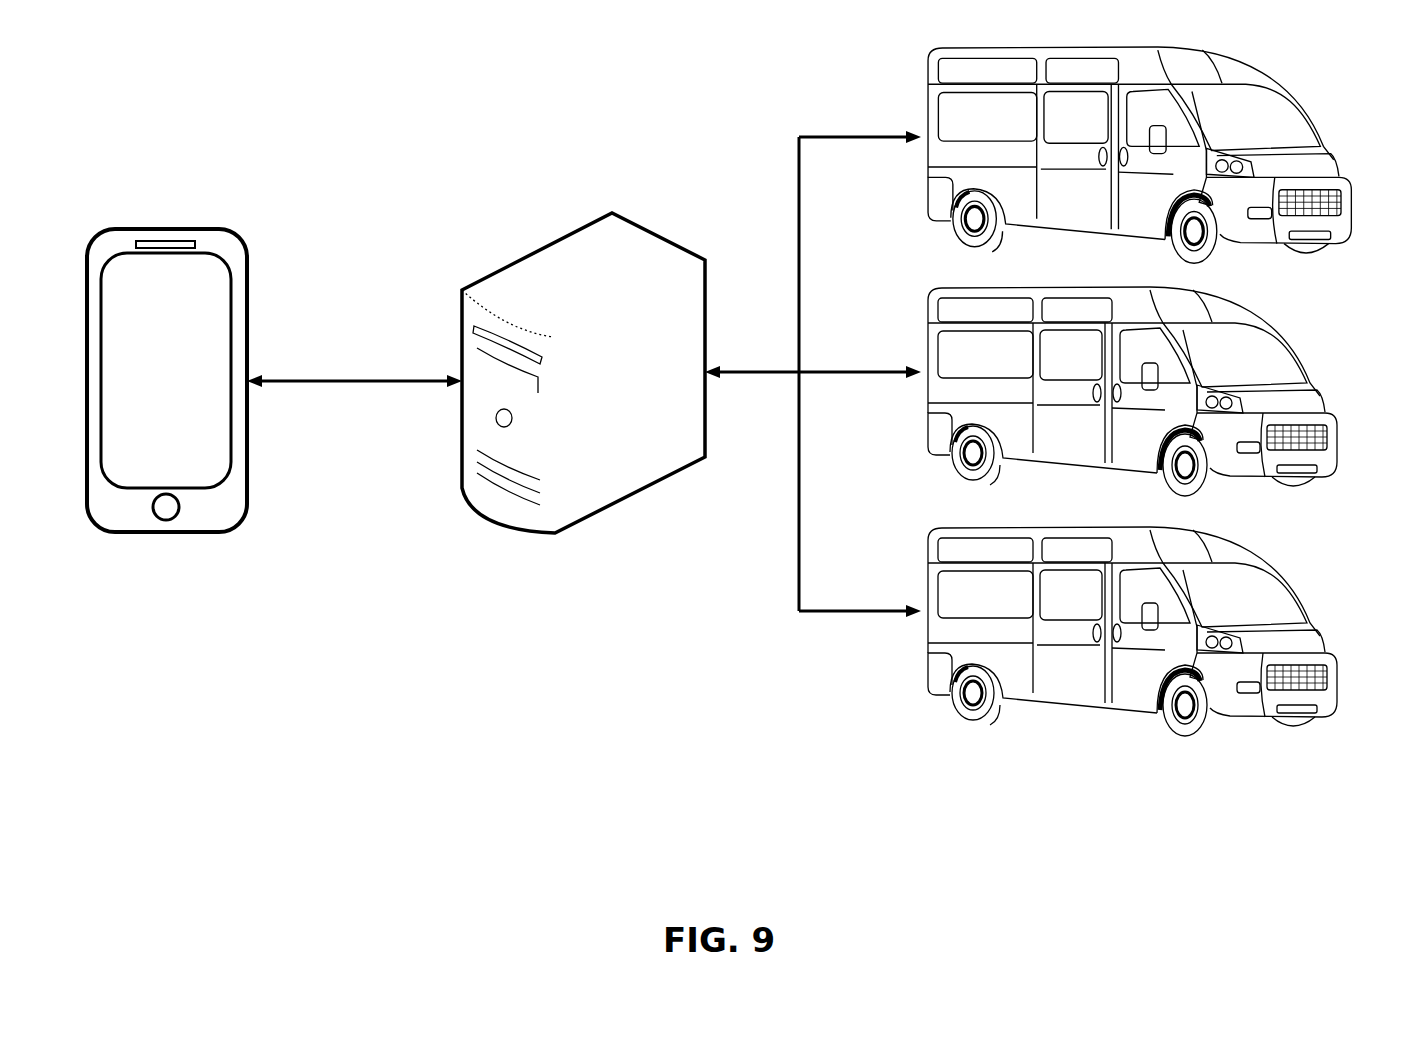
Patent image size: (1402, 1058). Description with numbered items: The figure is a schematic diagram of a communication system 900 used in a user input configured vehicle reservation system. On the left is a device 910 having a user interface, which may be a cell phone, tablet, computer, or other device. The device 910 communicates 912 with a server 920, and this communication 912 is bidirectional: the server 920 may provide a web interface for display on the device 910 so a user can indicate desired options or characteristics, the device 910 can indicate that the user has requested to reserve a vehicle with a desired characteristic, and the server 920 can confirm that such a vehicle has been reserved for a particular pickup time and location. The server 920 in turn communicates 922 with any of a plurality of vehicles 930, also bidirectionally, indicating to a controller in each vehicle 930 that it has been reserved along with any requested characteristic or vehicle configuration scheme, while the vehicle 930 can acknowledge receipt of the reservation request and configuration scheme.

The communication system 900 is at (331, 124).
The device 910 is at (165, 532).
The communication 912 is at (302, 382).
The server 920 is at (583, 507).
The communication 922 is at (762, 373).
The vehicle 930 is at (1327, 153).